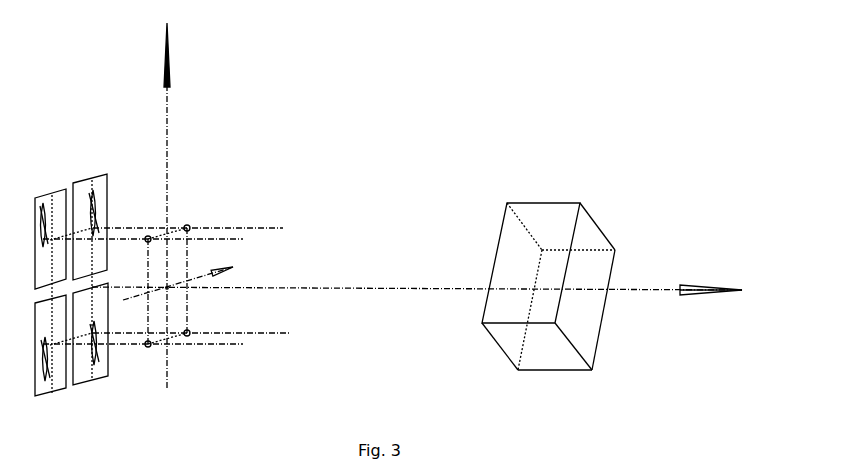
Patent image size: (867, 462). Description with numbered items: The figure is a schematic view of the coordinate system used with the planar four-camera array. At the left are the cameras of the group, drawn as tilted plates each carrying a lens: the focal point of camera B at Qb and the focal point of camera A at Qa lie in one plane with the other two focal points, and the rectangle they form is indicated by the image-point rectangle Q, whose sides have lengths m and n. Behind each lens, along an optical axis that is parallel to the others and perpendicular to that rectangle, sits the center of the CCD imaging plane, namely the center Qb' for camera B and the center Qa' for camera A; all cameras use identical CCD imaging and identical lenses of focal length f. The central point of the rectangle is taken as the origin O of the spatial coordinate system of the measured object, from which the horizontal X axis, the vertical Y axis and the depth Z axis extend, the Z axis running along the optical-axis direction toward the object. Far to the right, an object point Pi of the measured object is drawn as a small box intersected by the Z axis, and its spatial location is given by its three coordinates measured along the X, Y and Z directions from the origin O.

The focal point of camera B Qb is at (39, 236).
The center of imaging plane of camera B Qb' is at (110, 225).
The focal point of camera A Qa is at (62, 356).
The center of imaging plane of camera A Qa' is at (108, 340).
The rectangular plane of focal points Q is at (168, 288).
The object point Pi is at (548, 277).
The origin O is at (171, 296).
The X axis X is at (187, 280).
The Y axis Y is at (172, 205).
The Z axis Z is at (424, 292).